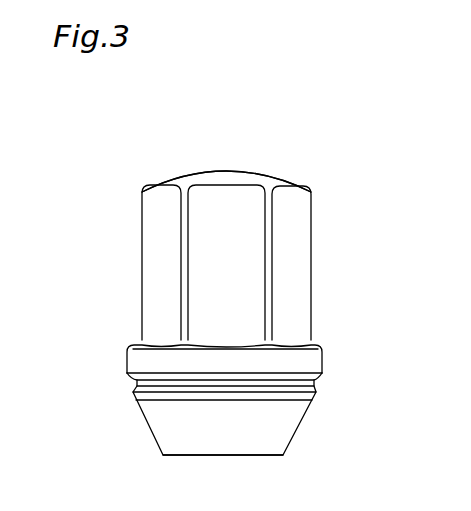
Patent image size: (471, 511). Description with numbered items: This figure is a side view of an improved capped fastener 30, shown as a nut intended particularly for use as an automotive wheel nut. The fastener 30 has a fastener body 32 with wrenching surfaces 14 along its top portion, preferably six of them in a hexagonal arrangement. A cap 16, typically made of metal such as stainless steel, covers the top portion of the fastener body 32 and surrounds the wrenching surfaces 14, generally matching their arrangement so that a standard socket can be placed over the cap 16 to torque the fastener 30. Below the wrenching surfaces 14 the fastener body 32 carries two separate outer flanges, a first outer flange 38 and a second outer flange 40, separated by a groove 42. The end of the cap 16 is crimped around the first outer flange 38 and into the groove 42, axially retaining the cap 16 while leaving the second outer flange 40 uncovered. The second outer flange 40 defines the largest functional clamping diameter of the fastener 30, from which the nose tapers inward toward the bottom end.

The improved capped fastener 30 is at (97, 186).
The wrenching surfaces 14 is at (225, 235).
The cap 16 is at (267, 175).
The first outer flange 38 is at (130, 362).
The groove 42 is at (140, 383).
The second outer flange 40 is at (132, 397).
The fastener body 32 is at (263, 457).